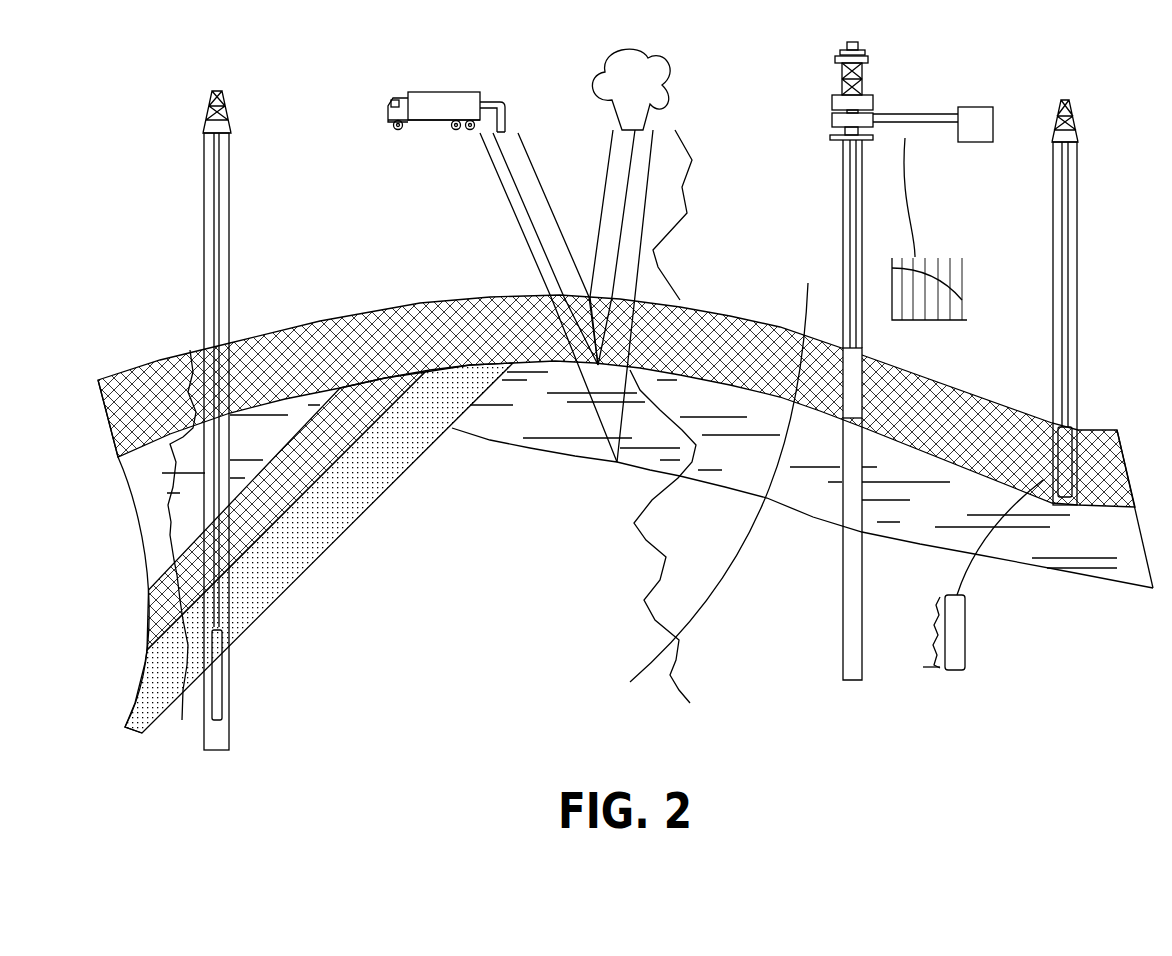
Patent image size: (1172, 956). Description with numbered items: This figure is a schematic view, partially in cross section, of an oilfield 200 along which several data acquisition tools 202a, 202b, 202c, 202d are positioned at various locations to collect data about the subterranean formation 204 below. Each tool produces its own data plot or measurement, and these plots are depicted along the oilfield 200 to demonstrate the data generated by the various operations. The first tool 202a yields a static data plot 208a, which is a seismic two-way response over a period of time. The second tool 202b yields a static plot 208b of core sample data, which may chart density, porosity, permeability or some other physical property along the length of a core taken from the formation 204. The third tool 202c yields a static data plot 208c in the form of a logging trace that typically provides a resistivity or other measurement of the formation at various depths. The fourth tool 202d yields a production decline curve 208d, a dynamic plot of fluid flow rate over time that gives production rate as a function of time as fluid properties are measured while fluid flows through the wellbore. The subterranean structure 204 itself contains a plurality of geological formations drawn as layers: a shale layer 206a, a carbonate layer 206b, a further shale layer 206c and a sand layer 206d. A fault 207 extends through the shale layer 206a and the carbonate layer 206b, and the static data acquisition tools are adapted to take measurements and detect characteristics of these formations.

The oilfield 200 is at (1024, 107).
The data acquisition tool 202a is at (412, 92).
The data acquisition tool 202b is at (1077, 485).
The data acquisition tool 202c is at (229, 677).
The data acquisition tool 202d is at (842, 455).
The subterranean formation 204 is at (505, 536).
The shale layer 206a is at (440, 350).
The carbonate layer 206b is at (279, 449).
The shale layer 206c is at (337, 466).
The sand layer 206d is at (392, 478).
The fault 207 is at (806, 290).
The static data plot 208a is at (660, 568).
The static plot 208b is at (938, 606).
The static data plot 208c is at (172, 485).
The production decline curve 208d is at (928, 320).